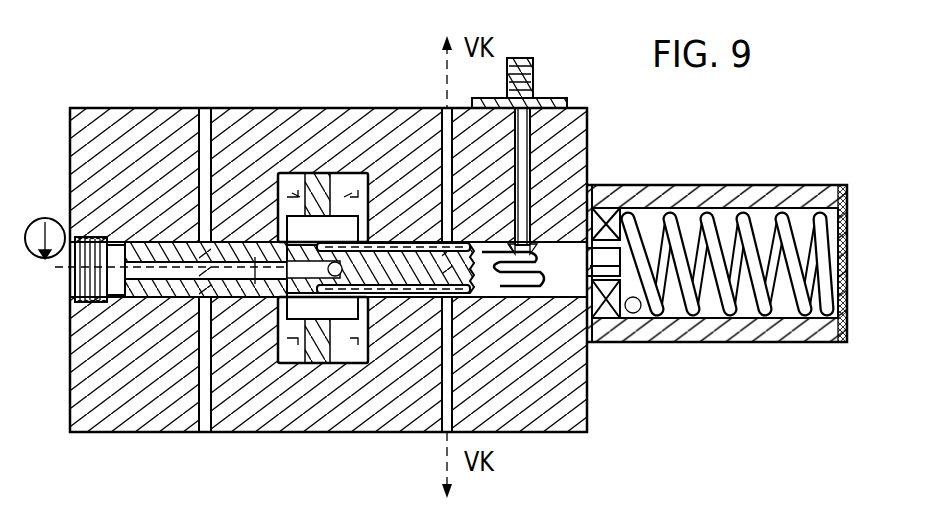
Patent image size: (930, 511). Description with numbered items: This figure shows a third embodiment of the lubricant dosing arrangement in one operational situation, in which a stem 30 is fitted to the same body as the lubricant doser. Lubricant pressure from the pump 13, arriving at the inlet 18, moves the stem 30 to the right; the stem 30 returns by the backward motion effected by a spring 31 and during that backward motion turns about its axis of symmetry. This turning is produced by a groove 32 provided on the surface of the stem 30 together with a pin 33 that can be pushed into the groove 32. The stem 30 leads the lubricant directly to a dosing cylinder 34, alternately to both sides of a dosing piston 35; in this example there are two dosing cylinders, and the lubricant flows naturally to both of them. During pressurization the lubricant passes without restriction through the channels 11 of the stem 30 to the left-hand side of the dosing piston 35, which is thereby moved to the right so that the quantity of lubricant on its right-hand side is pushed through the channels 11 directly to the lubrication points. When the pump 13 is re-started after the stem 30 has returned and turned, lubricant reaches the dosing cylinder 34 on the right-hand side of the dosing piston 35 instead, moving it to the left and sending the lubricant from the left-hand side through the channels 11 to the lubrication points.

The channels 11 is at (162, 246).
The pump 13 is at (43, 218).
The inlet 18 is at (80, 287).
The stem 30 is at (484, 284).
The spring 31 is at (725, 212).
The groove 32 is at (543, 282).
The pin 33 is at (530, 147).
The dosing cylinder 34 is at (300, 173).
The dosing piston 35 is at (325, 173).